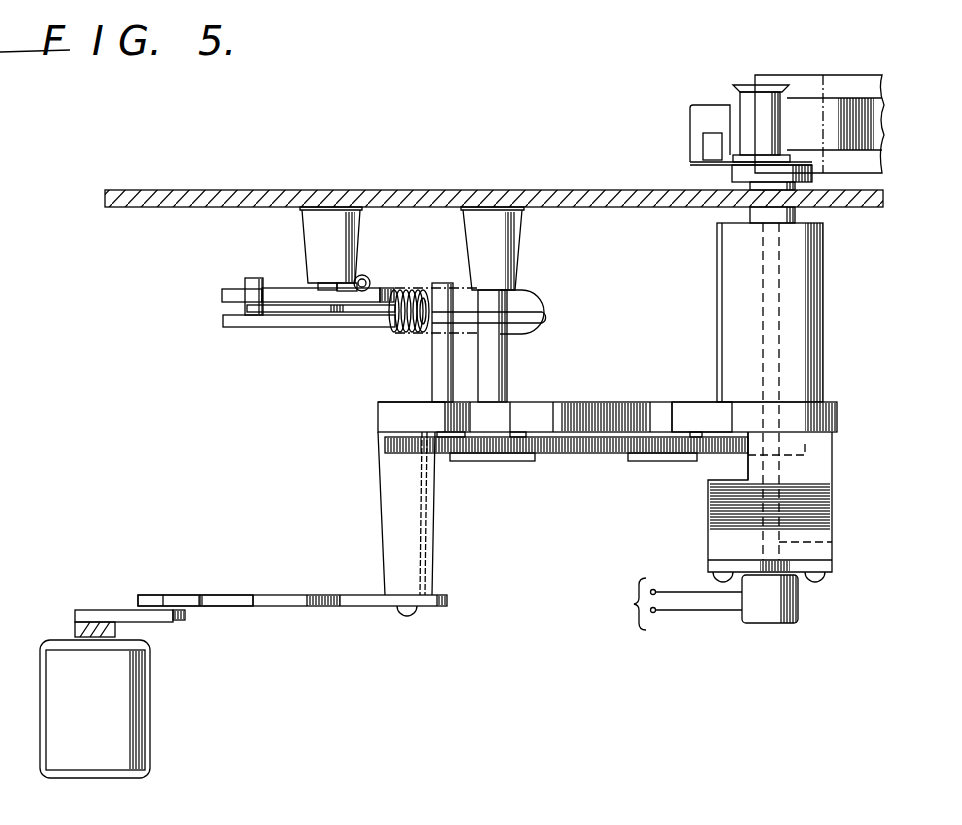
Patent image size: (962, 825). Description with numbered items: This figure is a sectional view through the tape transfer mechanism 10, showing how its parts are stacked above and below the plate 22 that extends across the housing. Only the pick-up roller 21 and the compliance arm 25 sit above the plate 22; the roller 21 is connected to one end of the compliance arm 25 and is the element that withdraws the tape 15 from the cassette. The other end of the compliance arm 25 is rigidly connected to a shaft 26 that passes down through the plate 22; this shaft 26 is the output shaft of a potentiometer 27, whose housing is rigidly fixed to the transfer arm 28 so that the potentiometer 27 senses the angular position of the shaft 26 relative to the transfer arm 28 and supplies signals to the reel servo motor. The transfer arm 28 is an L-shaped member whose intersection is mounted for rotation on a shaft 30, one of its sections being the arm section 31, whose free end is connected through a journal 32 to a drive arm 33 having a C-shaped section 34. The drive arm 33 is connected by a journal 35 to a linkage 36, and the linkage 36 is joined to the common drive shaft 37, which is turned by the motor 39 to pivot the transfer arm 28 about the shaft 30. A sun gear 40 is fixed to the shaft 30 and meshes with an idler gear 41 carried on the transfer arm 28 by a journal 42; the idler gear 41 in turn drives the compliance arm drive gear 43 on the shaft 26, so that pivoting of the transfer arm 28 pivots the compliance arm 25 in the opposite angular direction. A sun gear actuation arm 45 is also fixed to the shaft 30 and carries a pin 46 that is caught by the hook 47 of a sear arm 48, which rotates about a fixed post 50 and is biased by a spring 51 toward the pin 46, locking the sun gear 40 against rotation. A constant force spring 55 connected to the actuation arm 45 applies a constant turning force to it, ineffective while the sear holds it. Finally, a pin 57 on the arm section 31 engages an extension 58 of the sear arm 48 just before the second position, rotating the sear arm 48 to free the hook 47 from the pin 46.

The mechanism 10 is at (226, 416).
The tape 15 is at (838, 108).
The pick-up roller 21 is at (752, 102).
The plate 22 is at (522, 195).
The compliance arm 25 is at (700, 115).
The shaft 26 is at (800, 212).
The potentiometer 27 is at (775, 605).
The transfer arm 28 is at (585, 410).
The shaft 30 is at (493, 300).
The arm section 31 is at (390, 425).
The journal 32 is at (397, 512).
The drive arm 33 is at (340, 597).
The C-shaped section 34 is at (217, 597).
The journal 35 is at (180, 620).
The linkage 36 is at (117, 622).
The drive shaft 37 is at (75, 630).
The motor 39 is at (128, 690).
The sun gear 40 is at (570, 447).
The idler gear 41 is at (650, 447).
The journal 42 is at (673, 417).
The compliance arm drive gear 43 is at (748, 445).
The sun gear actuation arm 45 is at (300, 320).
The pin 46 is at (247, 307).
The hook 47 is at (238, 297).
The arm 48 is at (290, 292).
The post 50 is at (346, 284).
The spring 51 is at (367, 277).
The constant force spring 55 is at (422, 332).
The pin 57 is at (452, 290).
The extension 58 is at (360, 302).